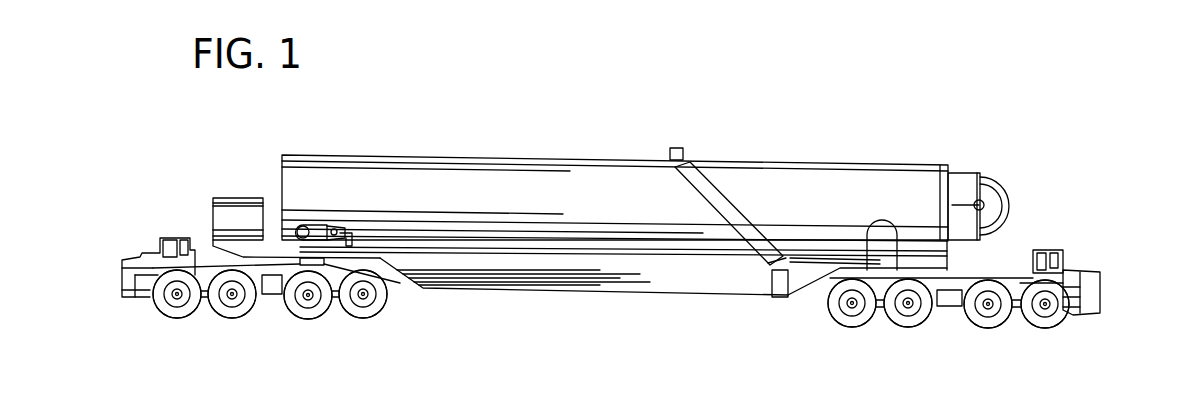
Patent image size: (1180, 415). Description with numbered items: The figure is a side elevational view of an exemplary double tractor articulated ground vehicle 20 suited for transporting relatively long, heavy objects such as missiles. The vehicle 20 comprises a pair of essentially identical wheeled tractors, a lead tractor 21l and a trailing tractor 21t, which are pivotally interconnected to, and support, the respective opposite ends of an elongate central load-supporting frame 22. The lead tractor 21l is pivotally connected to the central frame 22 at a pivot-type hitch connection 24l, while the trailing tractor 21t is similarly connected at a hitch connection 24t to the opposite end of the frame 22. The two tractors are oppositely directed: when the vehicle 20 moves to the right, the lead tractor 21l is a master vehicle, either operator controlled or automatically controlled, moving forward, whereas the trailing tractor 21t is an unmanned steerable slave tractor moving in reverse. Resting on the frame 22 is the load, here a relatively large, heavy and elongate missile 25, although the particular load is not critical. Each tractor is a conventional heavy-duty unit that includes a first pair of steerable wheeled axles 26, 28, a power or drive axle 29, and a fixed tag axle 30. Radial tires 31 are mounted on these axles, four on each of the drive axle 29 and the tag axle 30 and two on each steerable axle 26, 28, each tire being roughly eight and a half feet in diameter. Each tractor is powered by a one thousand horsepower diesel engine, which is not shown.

The double tractor articulated ground vehicle 20 is at (611, 255).
The trailing tractor 21t is at (146, 244).
The lead tractor 21l is at (1069, 256).
The central load-supporting frame 22 is at (630, 282).
The hitch connection 24t is at (317, 260).
The hitch connection 24l is at (884, 222).
The missile 25 is at (538, 163).
The steerable wheeled axle 26 is at (172, 297).
The steerable wheeled axle 28 is at (230, 314).
The power axle 29 is at (303, 306).
The fixed tag axle 30 is at (383, 307).
The radial tire 31 is at (308, 316).